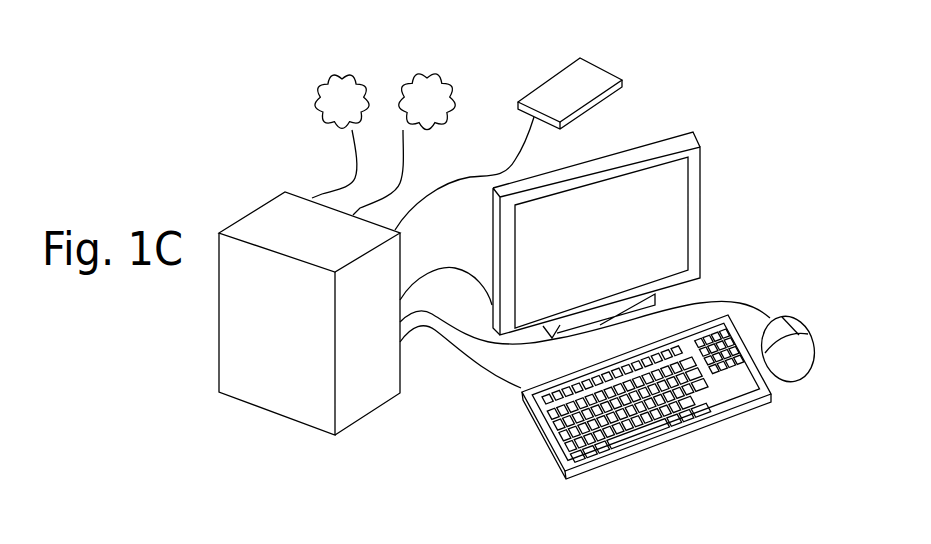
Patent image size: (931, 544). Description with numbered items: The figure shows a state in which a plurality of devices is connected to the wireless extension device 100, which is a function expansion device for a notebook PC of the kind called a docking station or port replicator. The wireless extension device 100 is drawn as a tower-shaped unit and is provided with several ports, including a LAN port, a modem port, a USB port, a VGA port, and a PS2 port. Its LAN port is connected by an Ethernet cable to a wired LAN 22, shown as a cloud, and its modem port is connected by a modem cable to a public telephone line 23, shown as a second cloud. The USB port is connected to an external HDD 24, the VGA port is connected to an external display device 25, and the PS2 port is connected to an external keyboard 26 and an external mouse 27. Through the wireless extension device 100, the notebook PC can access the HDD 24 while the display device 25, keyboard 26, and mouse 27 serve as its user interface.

The wireless extension device 100 is at (233, 356).
The wired LAN 22 is at (319, 79).
The public telephone line 23 is at (409, 72).
The external HDD 24 is at (544, 79).
The external display device 25 is at (696, 132).
The external keyboard 26 is at (545, 447).
The external mouse 27 is at (812, 378).